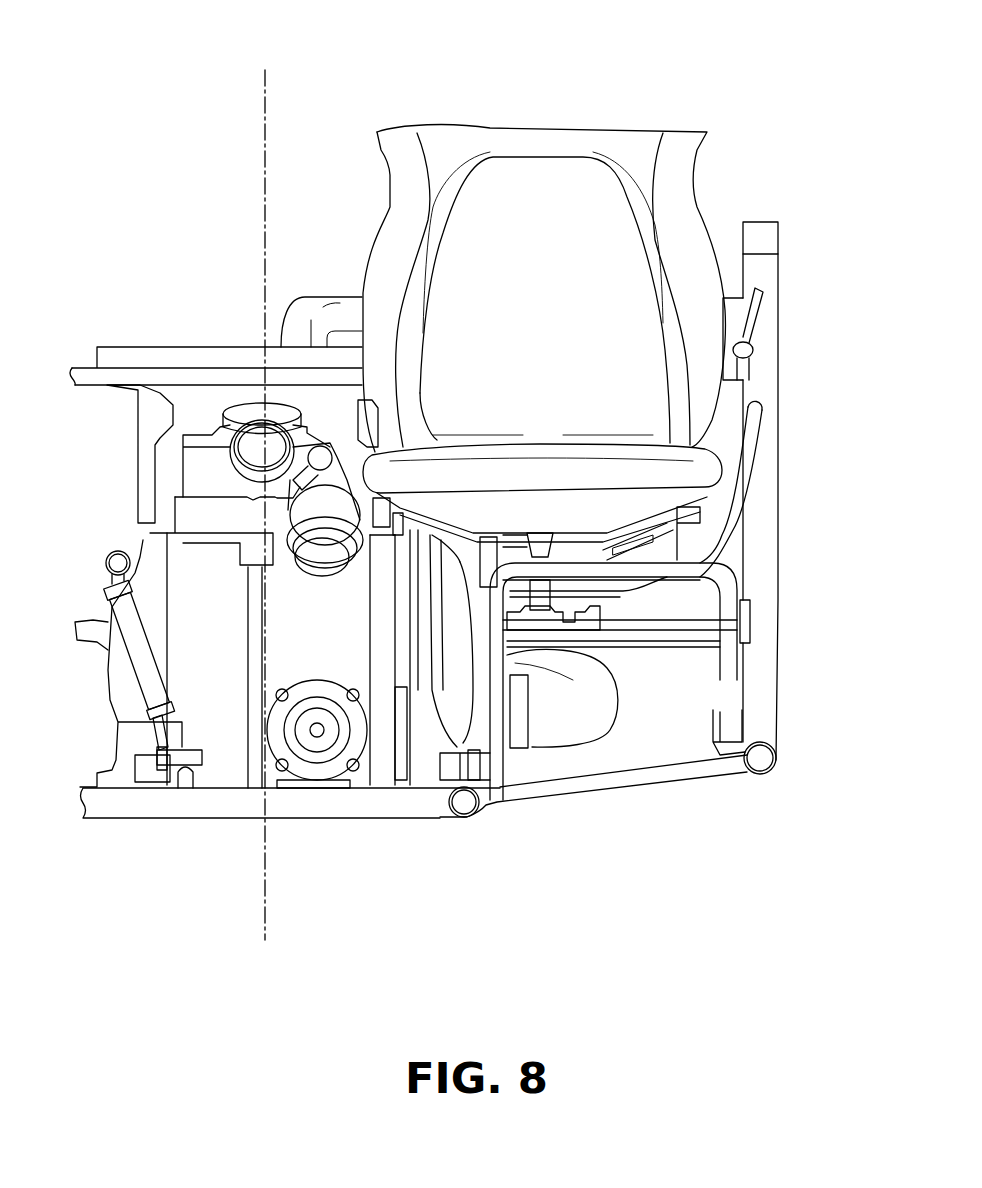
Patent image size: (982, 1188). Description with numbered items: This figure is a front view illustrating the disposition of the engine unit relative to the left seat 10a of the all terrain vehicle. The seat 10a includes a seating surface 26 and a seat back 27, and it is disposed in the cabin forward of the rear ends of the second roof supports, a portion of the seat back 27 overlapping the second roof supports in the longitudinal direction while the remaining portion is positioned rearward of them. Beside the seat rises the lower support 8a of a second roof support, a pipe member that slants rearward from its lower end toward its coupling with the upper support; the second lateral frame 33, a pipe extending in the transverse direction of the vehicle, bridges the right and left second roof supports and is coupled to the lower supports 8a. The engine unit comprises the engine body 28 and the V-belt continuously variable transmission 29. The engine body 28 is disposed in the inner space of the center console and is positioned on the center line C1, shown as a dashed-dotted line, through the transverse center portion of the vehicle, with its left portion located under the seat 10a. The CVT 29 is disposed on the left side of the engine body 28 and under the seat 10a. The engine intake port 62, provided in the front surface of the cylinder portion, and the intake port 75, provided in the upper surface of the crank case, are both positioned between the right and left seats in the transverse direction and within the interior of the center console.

The center line C1 is at (262, 92).
The seat 10a is at (525, 192).
The seating surface 26 is at (653, 497).
The seat back 27 is at (617, 348).
The lower support 8a is at (765, 487).
The second lateral frame 33 is at (182, 355).
The engine intake port 62 is at (252, 418).
The intake port 75 is at (326, 572).
The engine body 28 is at (228, 747).
The V-belt continuously variable transmission 29 is at (432, 735).